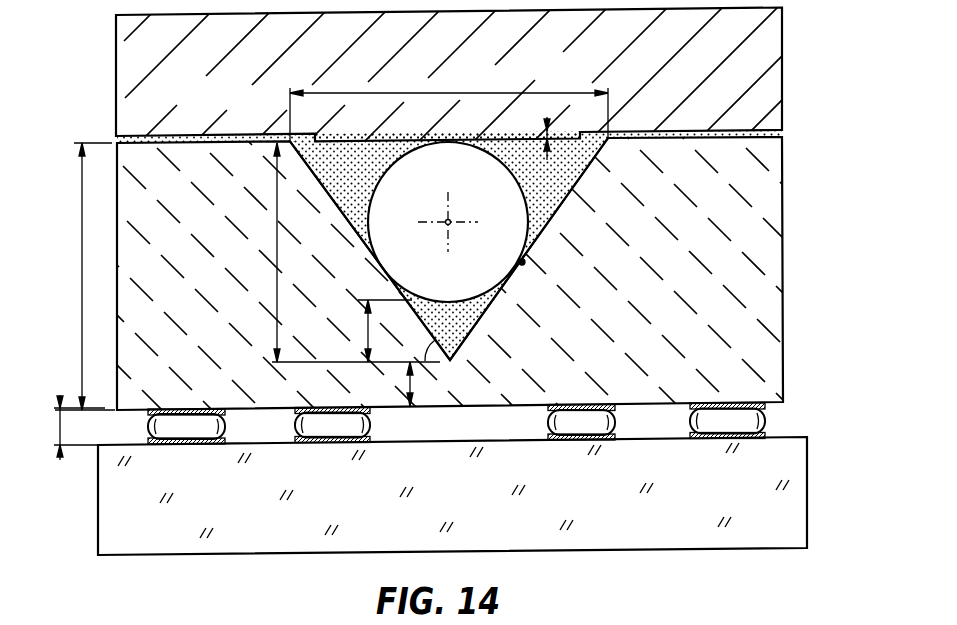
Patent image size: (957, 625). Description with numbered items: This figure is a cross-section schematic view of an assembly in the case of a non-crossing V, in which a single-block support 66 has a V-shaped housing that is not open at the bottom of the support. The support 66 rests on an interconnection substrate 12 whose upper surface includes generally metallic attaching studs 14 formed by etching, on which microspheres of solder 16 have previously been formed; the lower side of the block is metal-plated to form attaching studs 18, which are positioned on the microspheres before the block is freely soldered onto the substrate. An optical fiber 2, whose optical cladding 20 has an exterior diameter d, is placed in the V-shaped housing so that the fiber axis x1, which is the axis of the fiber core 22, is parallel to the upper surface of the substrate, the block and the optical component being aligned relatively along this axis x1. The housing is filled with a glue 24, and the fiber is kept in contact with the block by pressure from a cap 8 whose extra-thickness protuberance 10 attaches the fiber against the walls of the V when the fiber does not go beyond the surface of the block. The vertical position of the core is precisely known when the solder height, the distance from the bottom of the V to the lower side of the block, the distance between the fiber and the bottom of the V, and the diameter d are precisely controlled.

The fiber holder cap 8 is at (112, 103).
The protuberance 10 is at (319, 137).
The support 66 is at (776, 250).
The optical fiber 2 is at (490, 297).
The glue 24 is at (555, 178).
The optical cladding 20 is at (394, 244).
The fiber core 22 is at (447, 220).
The axis of the fiber x1 is at (481, 256).
The exterior diameter of the fiber d is at (523, 262).
The attaching studs 18 is at (745, 408).
The microspheres of solder 16 is at (766, 420).
The attaching studs 14 is at (762, 440).
The interconnection substrate 12 is at (788, 505).